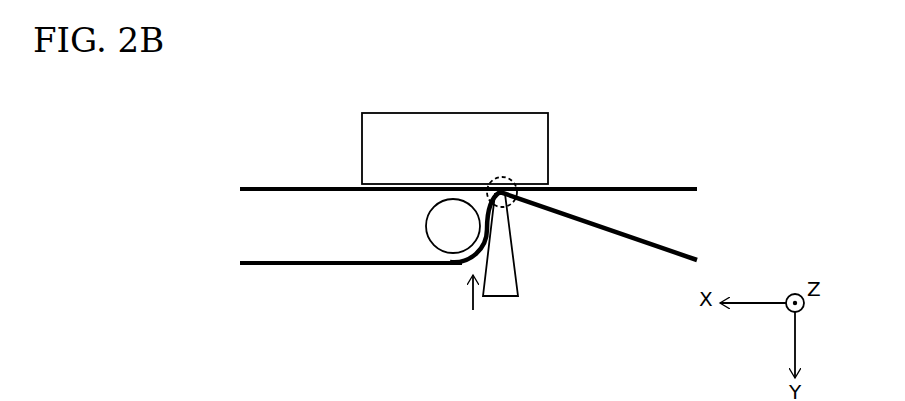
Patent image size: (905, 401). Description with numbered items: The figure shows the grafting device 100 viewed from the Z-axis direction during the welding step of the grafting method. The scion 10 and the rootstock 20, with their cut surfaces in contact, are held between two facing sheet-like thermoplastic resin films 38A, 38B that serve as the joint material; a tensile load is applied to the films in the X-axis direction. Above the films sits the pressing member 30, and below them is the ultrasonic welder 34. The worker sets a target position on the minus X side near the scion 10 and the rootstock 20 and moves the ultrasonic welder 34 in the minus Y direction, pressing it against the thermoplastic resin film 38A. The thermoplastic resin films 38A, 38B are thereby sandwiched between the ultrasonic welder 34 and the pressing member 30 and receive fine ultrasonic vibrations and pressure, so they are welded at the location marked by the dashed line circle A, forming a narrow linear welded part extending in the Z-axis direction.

The grafting device 100 is at (647, 112).
The thermoplastic resin film 38B is at (312, 187).
The thermoplastic resin film 38A is at (311, 265).
The pressing member 30 is at (548, 138).
The scion 10 is at (449, 238).
The rootstock 20 is at (573, 227).
The ultrasonic welder 34 is at (516, 277).
The dashed line circle A is at (514, 178).